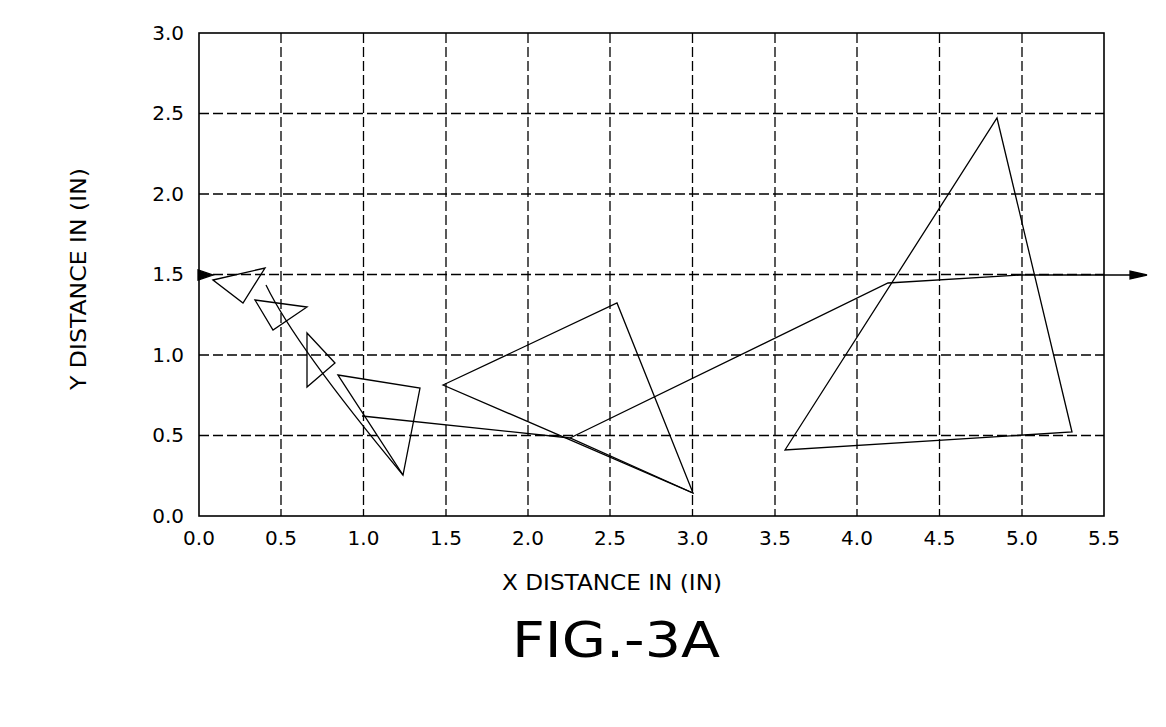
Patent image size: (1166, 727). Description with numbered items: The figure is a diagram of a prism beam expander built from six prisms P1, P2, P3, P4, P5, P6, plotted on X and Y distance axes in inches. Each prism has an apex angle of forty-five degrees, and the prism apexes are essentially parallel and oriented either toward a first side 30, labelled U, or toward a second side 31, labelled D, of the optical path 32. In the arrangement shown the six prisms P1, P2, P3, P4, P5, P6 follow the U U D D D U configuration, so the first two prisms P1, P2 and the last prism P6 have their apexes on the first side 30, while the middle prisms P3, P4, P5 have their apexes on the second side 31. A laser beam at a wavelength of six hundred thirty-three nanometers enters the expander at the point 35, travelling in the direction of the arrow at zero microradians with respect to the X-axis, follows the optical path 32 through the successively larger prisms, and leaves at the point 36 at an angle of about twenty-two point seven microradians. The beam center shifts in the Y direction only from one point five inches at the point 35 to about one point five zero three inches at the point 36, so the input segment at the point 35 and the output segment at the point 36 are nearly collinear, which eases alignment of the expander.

The first side 30 is at (400, 312).
The second side 31 is at (305, 475).
The optical path 32 is at (266, 285).
The entry point 35 is at (199, 272).
The exit point 36 is at (1117, 272).
The first prism P1 is at (250, 269).
The second prism P2 is at (287, 304).
The third prism P3 is at (307, 375).
The fourth prism P4 is at (380, 443).
The fifth prism P5 is at (587, 452).
The sixth prism P6 is at (910, 247).